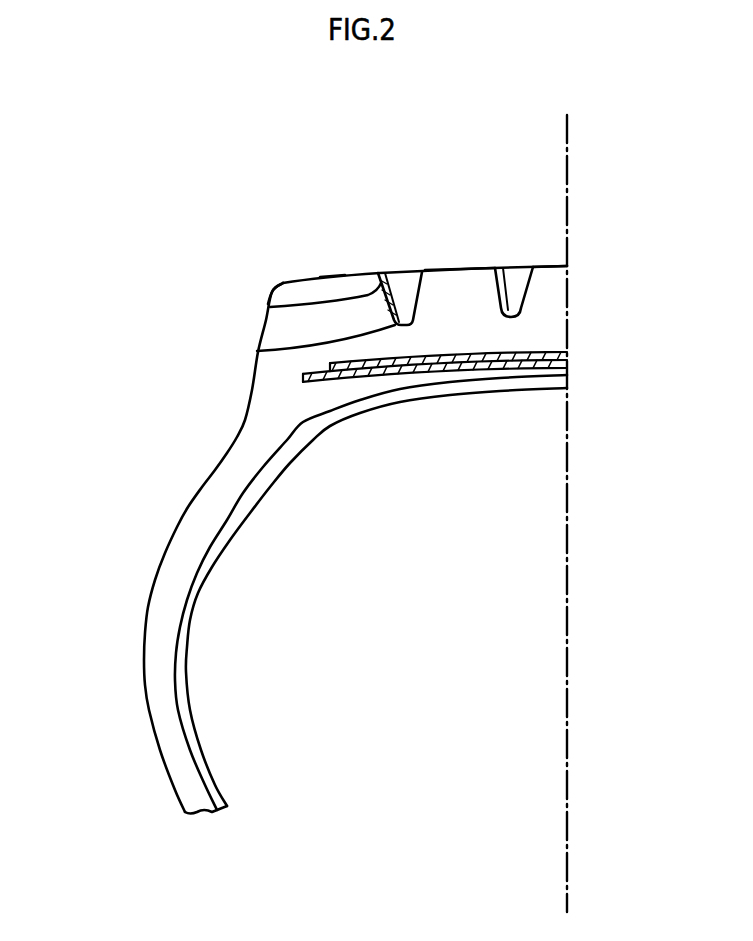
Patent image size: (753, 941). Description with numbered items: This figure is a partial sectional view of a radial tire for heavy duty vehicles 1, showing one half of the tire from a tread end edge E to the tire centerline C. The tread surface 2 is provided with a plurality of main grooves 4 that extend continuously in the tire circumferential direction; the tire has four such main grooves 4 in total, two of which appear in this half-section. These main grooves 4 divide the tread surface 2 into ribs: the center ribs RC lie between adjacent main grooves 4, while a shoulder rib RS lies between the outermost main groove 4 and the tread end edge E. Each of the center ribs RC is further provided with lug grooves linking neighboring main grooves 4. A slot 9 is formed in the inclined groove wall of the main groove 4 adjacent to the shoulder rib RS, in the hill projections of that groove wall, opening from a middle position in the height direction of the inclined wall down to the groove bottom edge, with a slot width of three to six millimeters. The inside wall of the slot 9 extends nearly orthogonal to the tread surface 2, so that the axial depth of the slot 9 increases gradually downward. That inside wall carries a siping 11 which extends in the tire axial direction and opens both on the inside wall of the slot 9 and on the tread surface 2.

The radial tire for heavy duty vehicles 1 is at (139, 269).
The tread surface 2 is at (305, 280).
The shoulder rib RS is at (328, 282).
The center rib RC is at (437, 280).
The main groove 4 is at (401, 284).
The tread end edge E is at (268, 295).
The siping 11 is at (270, 308).
The slot 9 is at (257, 351).
The tire equator / centerline C is at (567, 502).